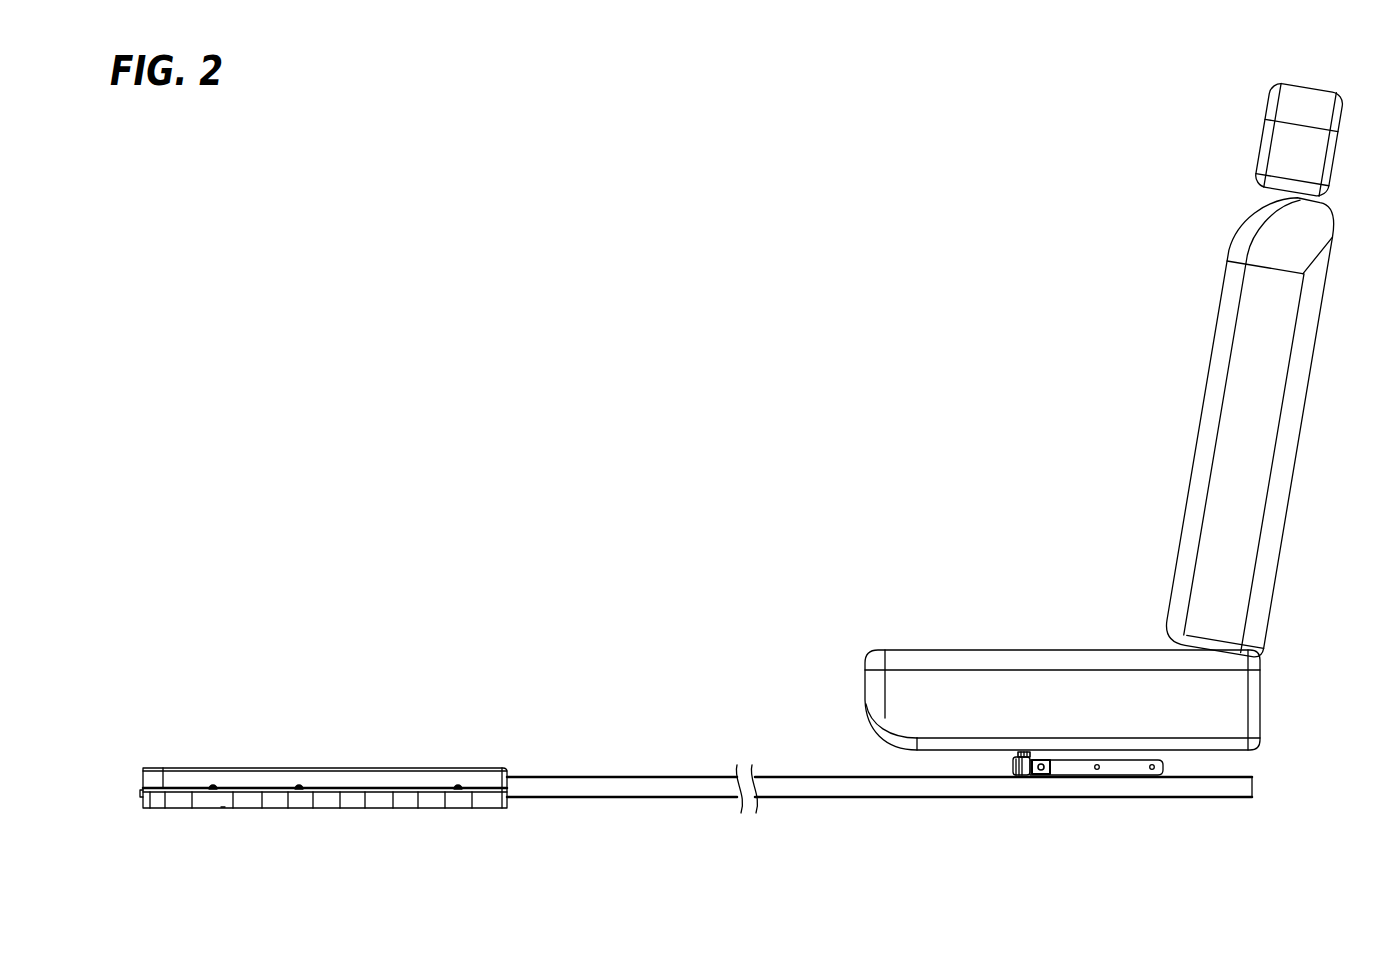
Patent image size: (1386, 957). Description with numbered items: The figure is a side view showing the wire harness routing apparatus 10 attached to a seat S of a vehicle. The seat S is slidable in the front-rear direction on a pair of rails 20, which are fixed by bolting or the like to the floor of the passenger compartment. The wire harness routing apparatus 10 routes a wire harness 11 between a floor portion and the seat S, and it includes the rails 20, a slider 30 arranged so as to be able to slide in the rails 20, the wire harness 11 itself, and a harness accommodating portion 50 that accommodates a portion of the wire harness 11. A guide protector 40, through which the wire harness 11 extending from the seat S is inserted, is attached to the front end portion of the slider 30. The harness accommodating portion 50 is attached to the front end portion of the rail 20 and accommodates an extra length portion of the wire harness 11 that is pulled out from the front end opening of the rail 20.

The seat S is at (1270, 422).
The wire harness routing apparatus 10 is at (323, 768).
The wire harness 11 is at (203, 809).
The rails 20 is at (643, 795).
The slider 30 is at (1128, 768).
The guide protector 40 is at (1025, 776).
The harness accommodating portion 50 is at (428, 742).